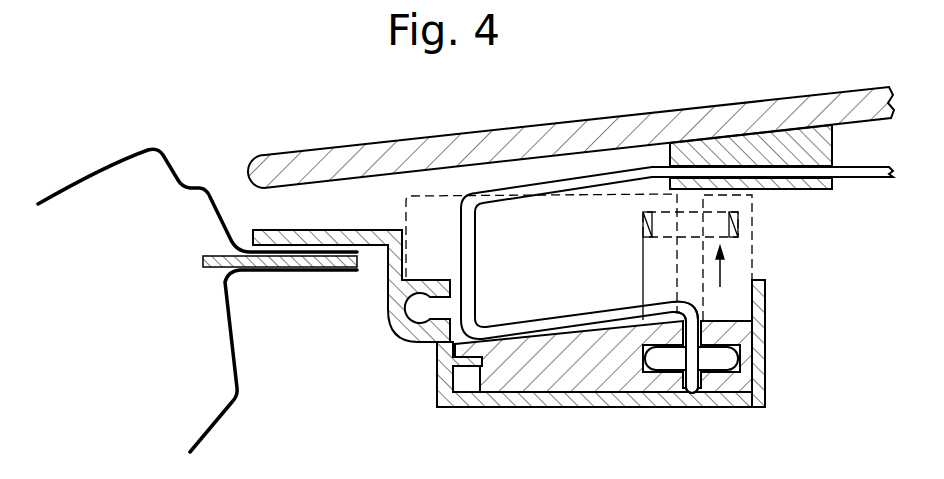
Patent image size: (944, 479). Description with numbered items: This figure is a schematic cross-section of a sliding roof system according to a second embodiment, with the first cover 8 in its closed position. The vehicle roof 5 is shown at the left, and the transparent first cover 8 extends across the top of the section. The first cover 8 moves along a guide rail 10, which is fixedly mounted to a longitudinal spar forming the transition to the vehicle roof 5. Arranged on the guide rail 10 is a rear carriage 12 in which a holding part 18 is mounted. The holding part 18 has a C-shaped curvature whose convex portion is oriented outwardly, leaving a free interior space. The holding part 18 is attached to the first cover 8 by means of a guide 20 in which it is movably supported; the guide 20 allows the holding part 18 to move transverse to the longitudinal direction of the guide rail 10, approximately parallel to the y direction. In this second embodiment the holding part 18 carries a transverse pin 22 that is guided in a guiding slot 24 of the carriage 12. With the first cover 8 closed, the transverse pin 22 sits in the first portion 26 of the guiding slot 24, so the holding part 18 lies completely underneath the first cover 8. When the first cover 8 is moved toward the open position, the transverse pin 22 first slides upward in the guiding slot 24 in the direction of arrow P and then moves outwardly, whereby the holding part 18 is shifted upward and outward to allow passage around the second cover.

The vehicle roof 5 is at (108, 163).
The first cover 8 is at (770, 101).
The guide rail 10 is at (612, 398).
The carriage 12 is at (545, 377).
The holding part 18 is at (543, 186).
The guide 20 is at (710, 141).
The transverse pin 22 is at (737, 352).
The guiding slot 24 is at (717, 368).
The first portion 26 is at (695, 307).
The arrow P is at (720, 287).